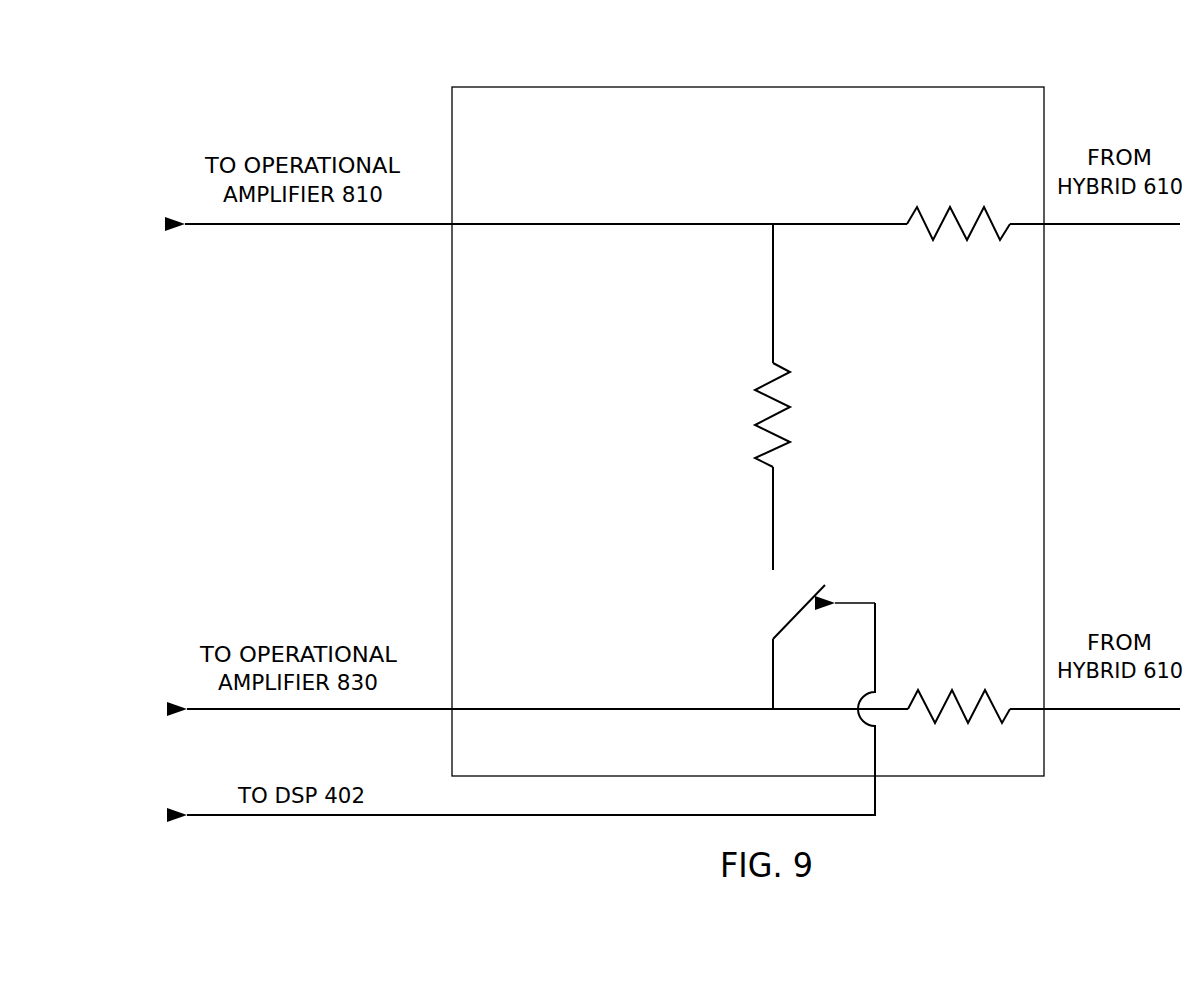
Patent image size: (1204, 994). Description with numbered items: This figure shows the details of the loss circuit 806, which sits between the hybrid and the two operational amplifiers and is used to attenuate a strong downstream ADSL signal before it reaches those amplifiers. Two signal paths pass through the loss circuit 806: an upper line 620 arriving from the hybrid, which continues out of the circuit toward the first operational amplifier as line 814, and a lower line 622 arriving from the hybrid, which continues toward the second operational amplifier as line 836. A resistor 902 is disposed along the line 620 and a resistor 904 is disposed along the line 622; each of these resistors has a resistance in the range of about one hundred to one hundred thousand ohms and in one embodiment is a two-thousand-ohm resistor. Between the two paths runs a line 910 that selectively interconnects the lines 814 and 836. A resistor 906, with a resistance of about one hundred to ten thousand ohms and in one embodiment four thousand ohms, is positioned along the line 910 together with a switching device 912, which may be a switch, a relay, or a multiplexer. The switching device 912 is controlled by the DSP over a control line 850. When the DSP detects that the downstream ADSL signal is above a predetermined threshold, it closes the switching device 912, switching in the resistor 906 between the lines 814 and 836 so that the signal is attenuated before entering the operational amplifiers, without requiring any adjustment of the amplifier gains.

The loss circuit 806 is at (895, 80).
The line 814 is at (697, 224).
The line 620 is at (1028, 224).
The resistor 902 is at (948, 237).
The line 910 is at (773, 304).
The resistor 906 is at (773, 427).
The switching device 912 is at (800, 615).
The resistor 904 is at (942, 700).
The line 622 is at (1020, 708).
The line 836 is at (630, 709).
The line 850 is at (415, 815).